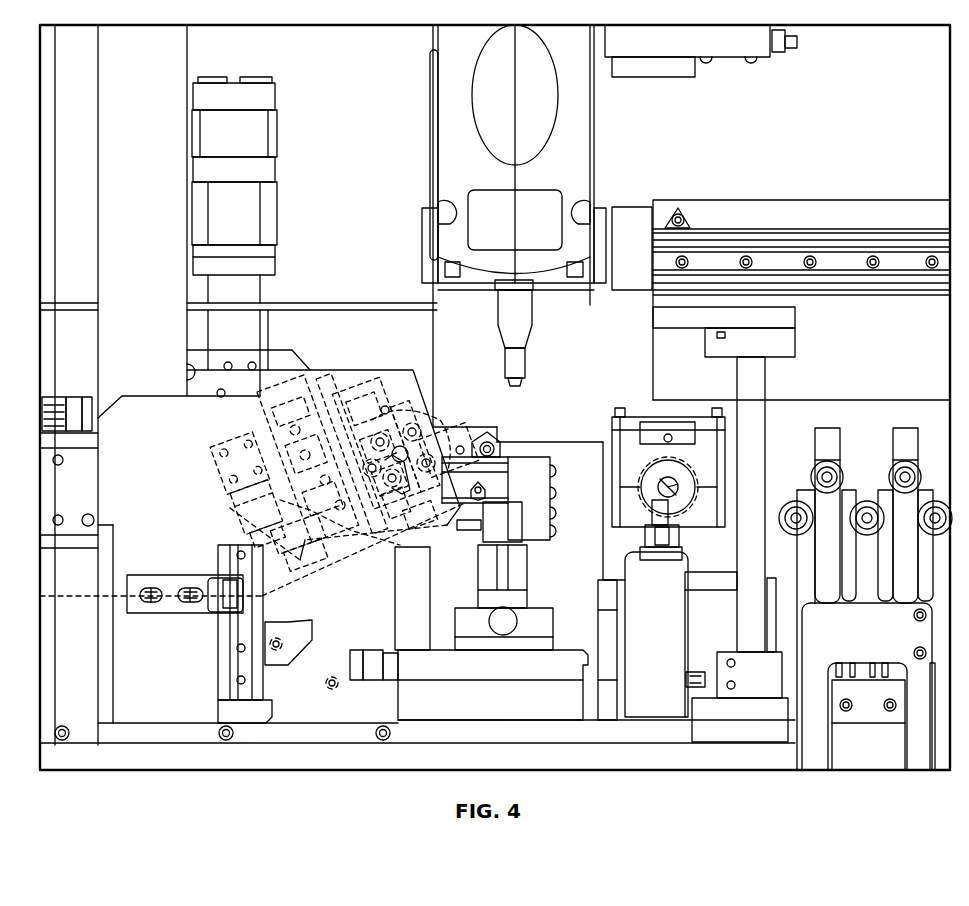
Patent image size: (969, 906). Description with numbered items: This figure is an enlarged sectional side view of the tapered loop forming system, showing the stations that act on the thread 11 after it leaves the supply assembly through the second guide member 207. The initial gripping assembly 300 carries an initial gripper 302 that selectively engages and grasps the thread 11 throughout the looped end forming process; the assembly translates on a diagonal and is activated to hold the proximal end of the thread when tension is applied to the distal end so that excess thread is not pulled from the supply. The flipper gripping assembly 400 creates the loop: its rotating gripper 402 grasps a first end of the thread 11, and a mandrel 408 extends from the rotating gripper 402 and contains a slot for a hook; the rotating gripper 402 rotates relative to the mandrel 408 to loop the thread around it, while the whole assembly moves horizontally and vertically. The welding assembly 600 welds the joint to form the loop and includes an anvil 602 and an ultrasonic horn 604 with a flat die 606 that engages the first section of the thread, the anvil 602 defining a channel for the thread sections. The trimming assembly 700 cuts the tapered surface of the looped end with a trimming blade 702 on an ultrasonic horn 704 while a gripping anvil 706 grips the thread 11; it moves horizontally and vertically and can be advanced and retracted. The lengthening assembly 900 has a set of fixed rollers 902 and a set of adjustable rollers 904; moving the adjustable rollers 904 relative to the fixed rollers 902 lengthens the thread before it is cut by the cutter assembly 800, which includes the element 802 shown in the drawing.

The thread 11 is at (86, 597).
The second guide member 207 is at (215, 617).
The initial gripping assembly 300 is at (215, 430).
The initial gripper 302 is at (316, 598).
The flipper gripping assembly 400 is at (366, 357).
The rotating gripper 402 is at (389, 510).
The mandrel 408 is at (405, 470).
The welding assembly 600 is at (622, 178).
The anvil 602 is at (523, 517).
The ultrasonic horn 604 is at (530, 317).
The flat die 606 is at (522, 384).
The trimming assembly 700 is at (746, 441).
The trimming blade 702 is at (657, 462).
The ultrasonic horn 704 is at (663, 482).
The gripping anvil 706 is at (648, 513).
The cutter assembly 800 is at (265, 372).
The slide rail 802 is at (328, 552).
The lengthening assembly 900 is at (877, 405).
The fixed rollers 902 is at (930, 536).
The adjustable rollers 904 is at (905, 462).